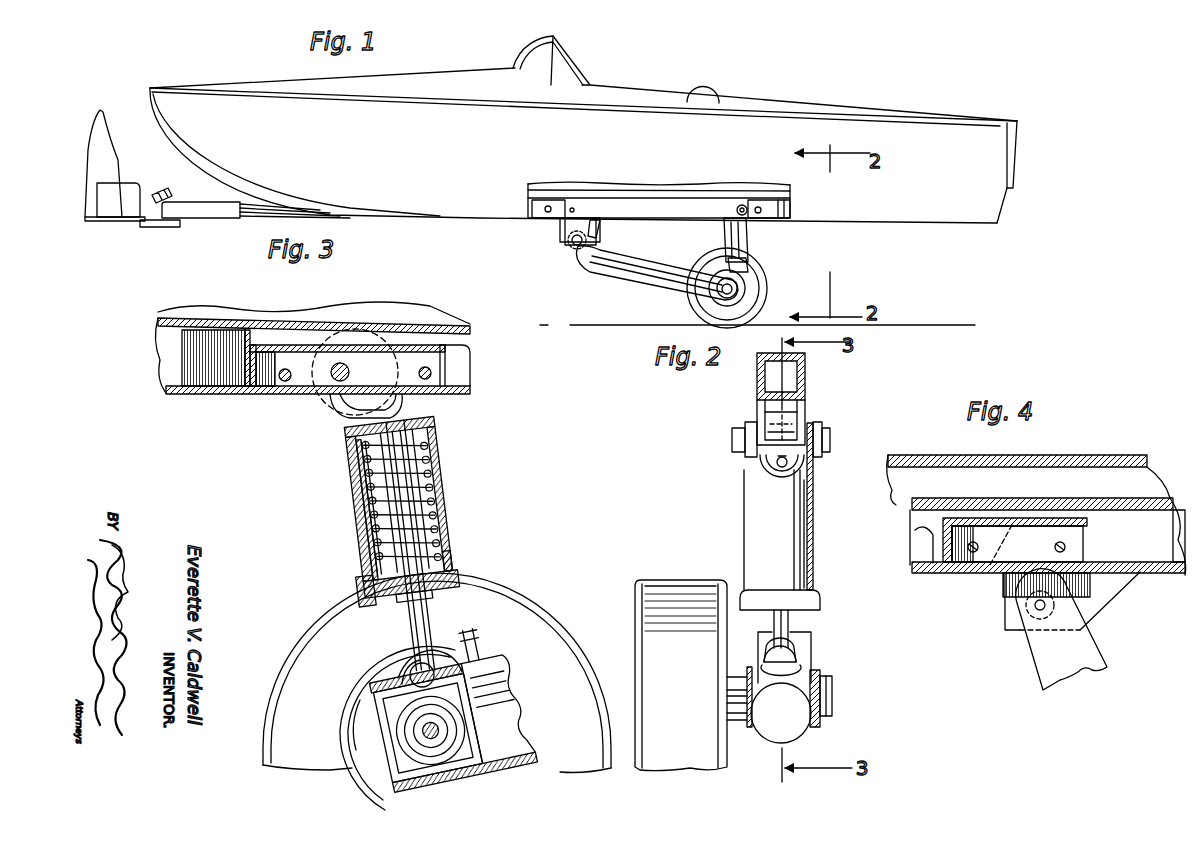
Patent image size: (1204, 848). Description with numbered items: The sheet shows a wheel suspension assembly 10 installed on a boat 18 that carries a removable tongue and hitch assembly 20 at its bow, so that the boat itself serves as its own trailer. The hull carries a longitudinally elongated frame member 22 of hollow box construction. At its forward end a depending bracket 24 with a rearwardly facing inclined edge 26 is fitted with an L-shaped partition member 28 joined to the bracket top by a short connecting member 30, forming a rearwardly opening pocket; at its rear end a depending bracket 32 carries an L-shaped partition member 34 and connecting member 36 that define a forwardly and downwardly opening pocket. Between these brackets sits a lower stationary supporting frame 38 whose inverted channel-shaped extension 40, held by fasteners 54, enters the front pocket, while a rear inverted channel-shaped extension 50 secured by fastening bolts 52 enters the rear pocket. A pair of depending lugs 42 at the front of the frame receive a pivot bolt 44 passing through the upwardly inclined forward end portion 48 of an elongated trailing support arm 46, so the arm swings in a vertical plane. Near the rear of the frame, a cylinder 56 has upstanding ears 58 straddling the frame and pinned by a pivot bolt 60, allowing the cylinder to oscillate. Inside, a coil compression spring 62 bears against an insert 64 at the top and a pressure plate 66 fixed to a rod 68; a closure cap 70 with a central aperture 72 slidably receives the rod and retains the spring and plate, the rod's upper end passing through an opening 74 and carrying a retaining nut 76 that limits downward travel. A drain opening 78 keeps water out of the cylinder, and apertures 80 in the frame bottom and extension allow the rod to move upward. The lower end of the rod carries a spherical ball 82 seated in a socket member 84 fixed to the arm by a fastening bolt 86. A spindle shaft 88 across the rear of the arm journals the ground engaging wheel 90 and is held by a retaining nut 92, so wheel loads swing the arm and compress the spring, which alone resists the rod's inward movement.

In FIG. 1, the wheel suspension assembly 10 is at (566, 247).
In FIG. 1, the boat structure 18 is at (490, 67).
In FIG. 1, the tongue and hitch assembly 20 is at (190, 199).
In FIG. 1, the frame member 22 is at (762, 196).
In FIG. 3, the frame member 22 is at (388, 324).
In FIG. 2, the frame member 22 is at (806, 375).
In FIG. 4, the frame member 22 is at (1075, 457).
In FIG. 1, the depending bracket 24 is at (530, 206).
In FIG. 4, the depending bracket 24 is at (925, 574).
In FIG. 4, the inclined edge 26 is at (990, 572).
In FIG. 4, the L-shaped partition member 28 is at (922, 532).
In FIG. 4, the connecting member 30 is at (1015, 522).
In FIG. 1, the depending bracket 32 is at (788, 198).
In FIG. 3, the depending bracket 32 is at (196, 395).
In FIG. 2, the depending bracket 32 is at (806, 412).
In FIG. 3, the L-shaped partition member 34 is at (244, 344).
In FIG. 3, the connecting member 36 is at (302, 345).
In FIG. 1, the lower stationary supporting frame 38 is at (682, 216).
In FIG. 3, the lower stationary supporting frame 38 is at (466, 395).
In FIG. 4, the lower stationary supporting frame 38 is at (1150, 574).
In FIG. 4, the inverted channel-shaped extension 40 is at (1050, 525).
In FIG. 1, the depending lugs 42 is at (560, 236).
In FIG. 4, the depending lugs 42 is at (1100, 608).
In FIG. 1, the pivot mounting pin or bolt 44 is at (574, 250).
In FIG. 4, the pivot mounting pin or bolt 44 is at (1035, 610).
In FIG. 1, the trailing support arm 46 is at (640, 270).
In FIG. 3, the trailing support arm 46 is at (510, 705).
In FIG. 2, the trailing support arm 46 is at (755, 622).
In FIG. 1, the upwardly inclined forward end portion 48 is at (592, 232).
In FIG. 4, the upwardly inclined forward end portion 48 is at (1080, 666).
In FIG. 3, the inverted longitudinal channel-shaped extension 50 is at (464, 350).
In FIG. 2, the inverted longitudinal channel-shaped extension 50 is at (740, 428).
In FIG. 3, the fastening bolts or rivets 52 is at (428, 382).
In FIG. 4, the fasteners 54 is at (1066, 548).
In FIG. 1, the cylinder 56 is at (748, 238).
In FIG. 3, the cylinder 56 is at (423, 501).
In FIG. 2, the cylinder 56 is at (815, 572).
In FIG. 3, the upstanding lugs or ears 58 is at (369, 440).
In FIG. 1, the pivot bolt or pin 60 is at (742, 205).
In FIG. 3, the pivot bolt or pin 60 is at (334, 380).
In FIG. 2, the pivot bolt or pin 60 is at (832, 438).
In FIG. 3, the coil compression spring 62 is at (430, 497).
In FIG. 3, the insert 64 is at (340, 513).
In FIG. 3, the pressure plate 66 is at (471, 542).
In FIG. 1, the rod 68 is at (750, 258).
In FIG. 3, the rod 68 is at (437, 542).
In FIG. 2, the rod 68 is at (790, 622).
In FIG. 3, the closure cap 70 is at (443, 565).
In FIG. 3, the central aperture 72 is at (406, 612).
In FIG. 3, the opening 74 is at (370, 504).
In FIG. 3, the retaining nut 76 is at (350, 406).
In FIG. 2, the retaining nut 76 is at (806, 463).
In FIG. 3, the drain opening 78 is at (352, 589).
In FIG. 3, the apertures 80 is at (355, 372).
In FIG. 3, the spherical ball 82 is at (398, 672).
In FIG. 3, the socket member 84 is at (440, 660).
In FIG. 2, the socket member 84 is at (808, 655).
In FIG. 3, the fastening bolt 86 is at (483, 631).
In FIG. 1, the spindle shaft 88 is at (757, 298).
In FIG. 3, the spindle shaft 88 is at (453, 722).
In FIG. 1, the ground engaging wheel 90 is at (762, 284).
In FIG. 3, the ground engaging wheel 90 is at (574, 645).
In FIG. 2, the ground engaging wheel 90 is at (664, 590).
In FIG. 2, the retaining nut 92 is at (835, 697).